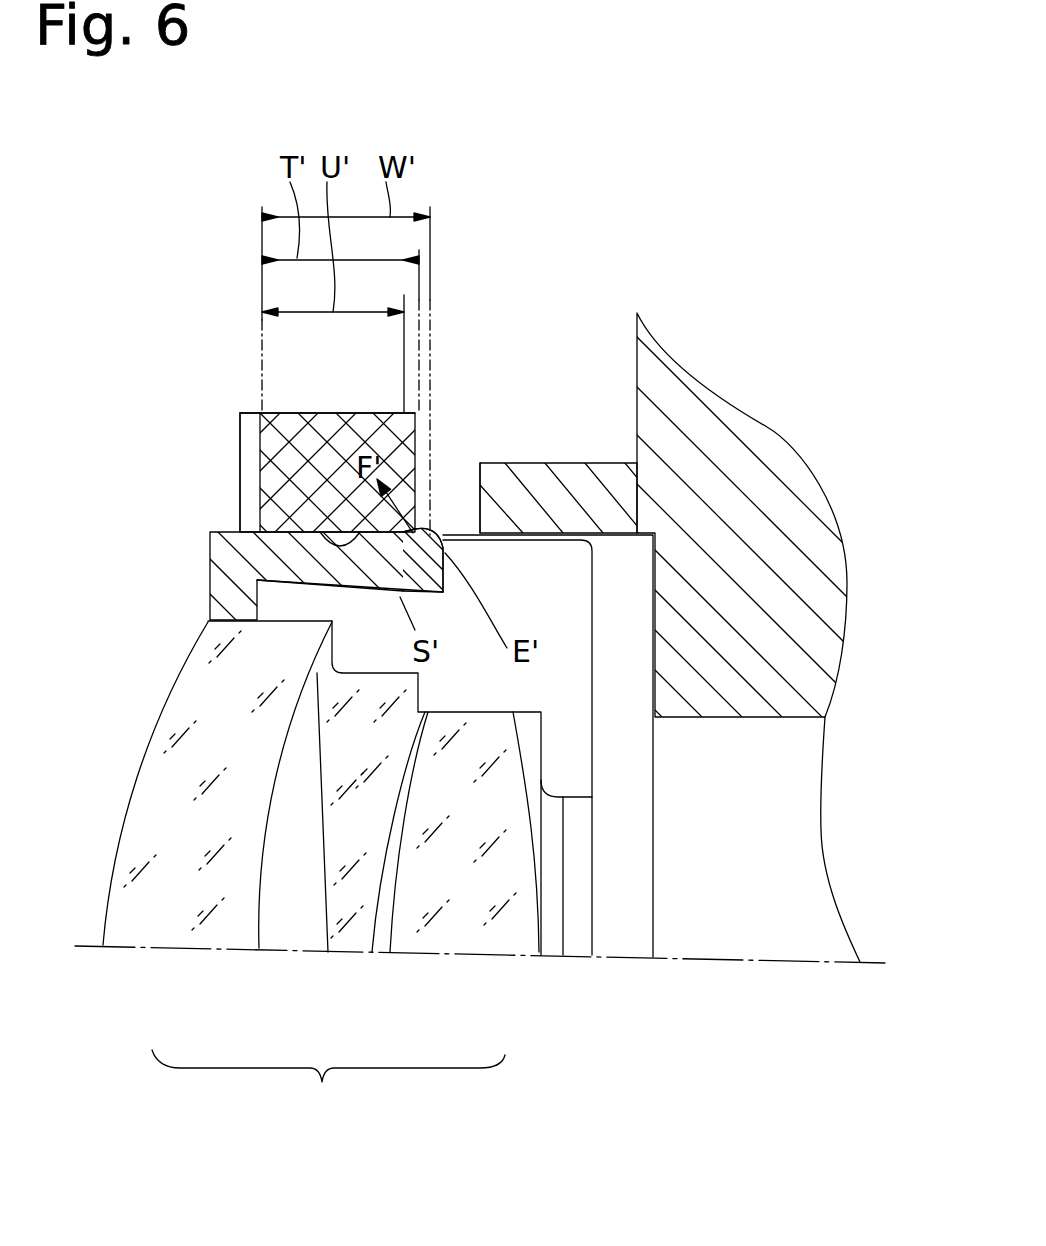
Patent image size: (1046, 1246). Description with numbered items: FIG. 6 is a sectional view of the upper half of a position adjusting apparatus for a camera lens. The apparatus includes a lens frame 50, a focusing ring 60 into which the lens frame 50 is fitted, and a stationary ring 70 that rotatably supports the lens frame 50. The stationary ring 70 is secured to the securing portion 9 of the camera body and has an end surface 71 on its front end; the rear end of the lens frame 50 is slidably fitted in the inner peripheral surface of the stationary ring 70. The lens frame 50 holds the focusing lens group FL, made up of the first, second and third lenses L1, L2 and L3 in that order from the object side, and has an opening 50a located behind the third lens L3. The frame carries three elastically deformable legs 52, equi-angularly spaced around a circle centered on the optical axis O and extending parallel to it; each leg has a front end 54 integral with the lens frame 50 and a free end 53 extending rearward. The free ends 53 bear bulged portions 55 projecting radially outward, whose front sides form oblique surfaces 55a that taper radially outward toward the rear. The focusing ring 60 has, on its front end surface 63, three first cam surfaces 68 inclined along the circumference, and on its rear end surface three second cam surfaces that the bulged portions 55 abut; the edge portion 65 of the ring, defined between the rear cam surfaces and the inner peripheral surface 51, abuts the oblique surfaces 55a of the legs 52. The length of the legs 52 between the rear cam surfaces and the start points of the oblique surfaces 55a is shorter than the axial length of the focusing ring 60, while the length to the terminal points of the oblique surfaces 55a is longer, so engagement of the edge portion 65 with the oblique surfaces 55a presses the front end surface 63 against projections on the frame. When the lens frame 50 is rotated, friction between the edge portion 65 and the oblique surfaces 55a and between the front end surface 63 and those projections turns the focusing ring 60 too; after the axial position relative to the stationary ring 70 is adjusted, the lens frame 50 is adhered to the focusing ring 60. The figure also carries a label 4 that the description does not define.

The lens barrel 4 is at (422, 530).
The securing portion 9 is at (780, 462).
The lens frame 50 is at (508, 560).
The opening 50a is at (583, 800).
The inner peripheral surface 51 is at (330, 535).
The elastically deformable legs 52 is at (353, 596).
The free ends 53 is at (432, 594).
The front ends 54 is at (267, 558).
The bulged portions 55 is at (438, 530).
The oblique surfaces 55a is at (422, 528).
The focusing ring 60 is at (332, 426).
The front end surface 63 is at (238, 448).
The edge portion 65 is at (258, 417).
The first cam surfaces 68 is at (247, 470).
The stationary ring 70 is at (583, 490).
The end surface 71 is at (478, 488).
The optical axis O is at (88, 950).
The first lens L1 is at (182, 952).
The second lens L2 is at (362, 955).
The third lens L3 is at (470, 955).
The focusing lens group FL is at (328, 1083).